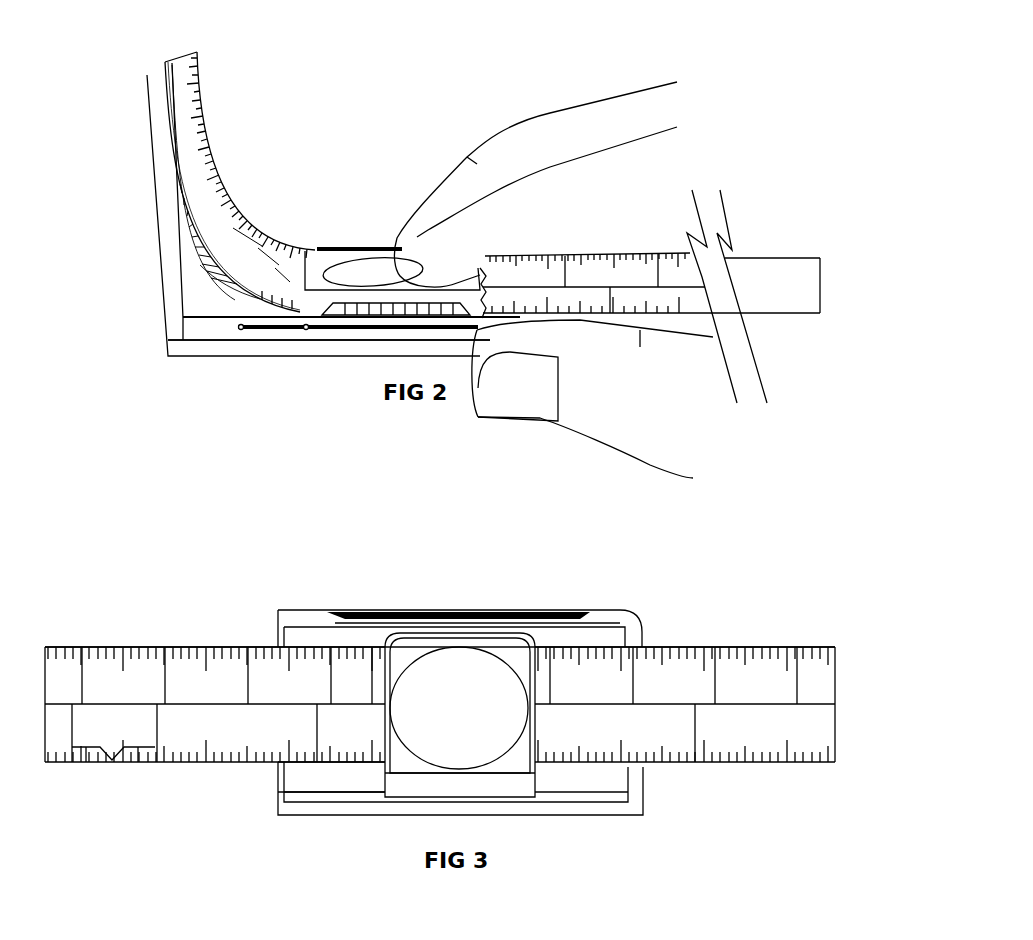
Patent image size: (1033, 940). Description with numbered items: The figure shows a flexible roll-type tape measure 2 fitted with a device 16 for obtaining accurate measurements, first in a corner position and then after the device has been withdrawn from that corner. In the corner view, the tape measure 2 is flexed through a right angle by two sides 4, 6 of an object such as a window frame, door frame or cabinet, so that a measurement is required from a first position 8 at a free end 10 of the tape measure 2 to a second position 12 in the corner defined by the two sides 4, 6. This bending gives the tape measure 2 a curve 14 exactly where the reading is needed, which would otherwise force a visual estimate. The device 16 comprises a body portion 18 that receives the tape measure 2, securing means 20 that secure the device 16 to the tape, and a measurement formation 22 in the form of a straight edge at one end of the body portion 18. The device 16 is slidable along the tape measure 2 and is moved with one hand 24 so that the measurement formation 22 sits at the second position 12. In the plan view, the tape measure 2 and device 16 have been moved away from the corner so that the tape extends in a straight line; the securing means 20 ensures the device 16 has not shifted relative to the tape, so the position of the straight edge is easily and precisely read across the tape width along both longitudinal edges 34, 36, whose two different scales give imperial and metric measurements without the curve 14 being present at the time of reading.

In FIG. 2, the tape measure 2 is at (206, 136).
In FIG. 3, the tape measure 2 is at (120, 646).
In FIG. 2, the side 4 is at (172, 263).
In FIG. 2, the side 6 is at (345, 347).
In FIG. 2, the first position 8 is at (818, 258).
In FIG. 2, the free end 10 is at (790, 300).
In FIG. 2, the second position 12 is at (205, 289).
In FIG. 2, the curve 14 is at (246, 241).
In FIG. 2, the device 16 is at (336, 248).
In FIG. 3, the device 16 is at (617, 609).
In FIG. 2, the body portion 18 is at (312, 304).
In FIG. 3, the body portion 18 is at (587, 786).
In FIG. 2, the securing means 20 is at (374, 267).
In FIG. 3, the securing means 20 is at (462, 706).
In FIG. 2, the measurement formation 22 is at (200, 284).
In FIG. 3, the measurement formation 22 is at (277, 777).
In FIG. 2, the hand 24 is at (641, 86).
In FIG. 3, the longitudinal edge 34 is at (763, 646).
In FIG. 3, the longitudinal edge 36 is at (768, 765).